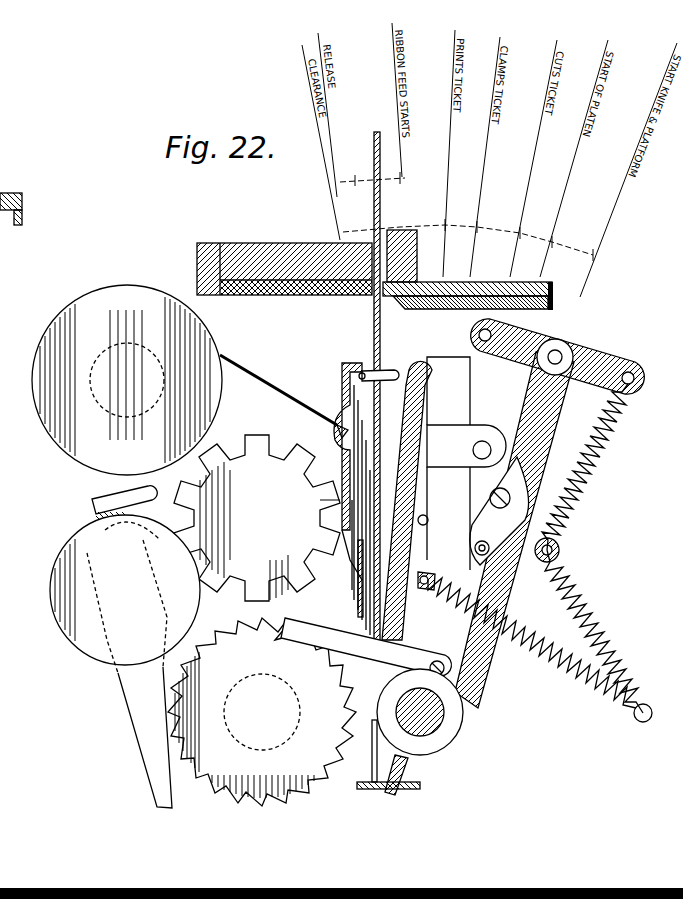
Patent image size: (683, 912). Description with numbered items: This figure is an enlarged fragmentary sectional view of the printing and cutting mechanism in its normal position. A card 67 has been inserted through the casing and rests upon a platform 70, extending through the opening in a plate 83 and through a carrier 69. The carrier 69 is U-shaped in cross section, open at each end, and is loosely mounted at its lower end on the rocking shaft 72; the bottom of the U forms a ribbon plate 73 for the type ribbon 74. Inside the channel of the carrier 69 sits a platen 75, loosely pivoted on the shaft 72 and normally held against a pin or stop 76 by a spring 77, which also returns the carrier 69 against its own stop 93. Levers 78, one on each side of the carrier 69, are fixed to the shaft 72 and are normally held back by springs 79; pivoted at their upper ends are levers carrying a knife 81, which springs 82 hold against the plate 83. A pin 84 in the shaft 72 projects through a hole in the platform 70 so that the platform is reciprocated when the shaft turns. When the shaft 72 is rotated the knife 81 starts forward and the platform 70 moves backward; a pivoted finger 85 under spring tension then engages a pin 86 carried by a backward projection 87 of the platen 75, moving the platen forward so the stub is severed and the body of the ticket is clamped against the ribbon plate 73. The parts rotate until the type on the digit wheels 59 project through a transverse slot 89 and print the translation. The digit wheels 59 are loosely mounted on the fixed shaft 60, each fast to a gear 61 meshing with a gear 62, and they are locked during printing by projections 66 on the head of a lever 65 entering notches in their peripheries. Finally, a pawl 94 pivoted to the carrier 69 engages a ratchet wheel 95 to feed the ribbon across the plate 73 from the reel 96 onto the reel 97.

The digit wheel 59 is at (230, 442).
The fixed shaft 60 is at (617, 358).
The gear 61 is at (237, 531).
The gear 62 is at (60, 556).
The lever 65 is at (145, 737).
The projections 66 is at (132, 496).
The card 67 is at (373, 308).
The carrier 69 is at (392, 371).
The platform 70 is at (360, 789).
The shaft 72 is at (440, 728).
The ribbon plate 73 is at (352, 578).
The type ribbon 74 is at (270, 392).
The platen 75 is at (420, 372).
The pin or stop 76 is at (426, 514).
The spring 77 is at (527, 640).
The lever 78 is at (556, 418).
The spring 79 is at (598, 636).
The knife 81 is at (558, 349).
The spring 82 is at (592, 470).
The plate 83 is at (286, 238).
The pin 84 is at (406, 770).
The pivoted finger 85 is at (499, 511).
The pin 86 is at (482, 441).
The backward projection 87 is at (466, 446).
The transverse slot 89 is at (336, 512).
The stop 93 is at (358, 371).
The pawl 94 is at (366, 647).
The ratchet wheel 95 is at (262, 712).
The reel 96 is at (127, 380).
The reel 97 is at (263, 628).